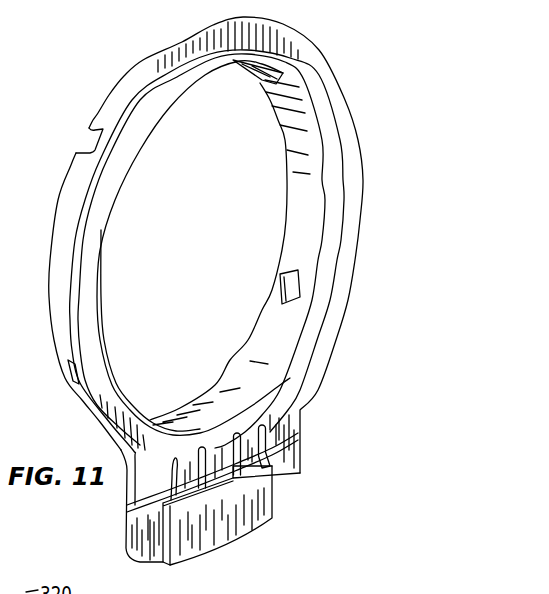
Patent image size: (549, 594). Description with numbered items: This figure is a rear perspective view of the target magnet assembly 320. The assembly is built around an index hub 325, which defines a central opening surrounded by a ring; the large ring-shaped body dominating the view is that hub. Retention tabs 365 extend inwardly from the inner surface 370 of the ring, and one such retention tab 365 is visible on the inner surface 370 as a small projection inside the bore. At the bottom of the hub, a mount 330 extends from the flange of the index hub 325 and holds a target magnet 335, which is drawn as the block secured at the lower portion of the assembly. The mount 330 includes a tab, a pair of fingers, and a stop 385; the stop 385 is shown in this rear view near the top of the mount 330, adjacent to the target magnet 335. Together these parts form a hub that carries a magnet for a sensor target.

The target magnet assembly 320 is at (364, 74).
The index hub 325 is at (342, 168).
The mount 330 is at (305, 514).
The target magnet 335 is at (258, 518).
The retention tabs 365 is at (278, 303).
The inner surface 370 is at (307, 203).
The stop 385 is at (300, 476).